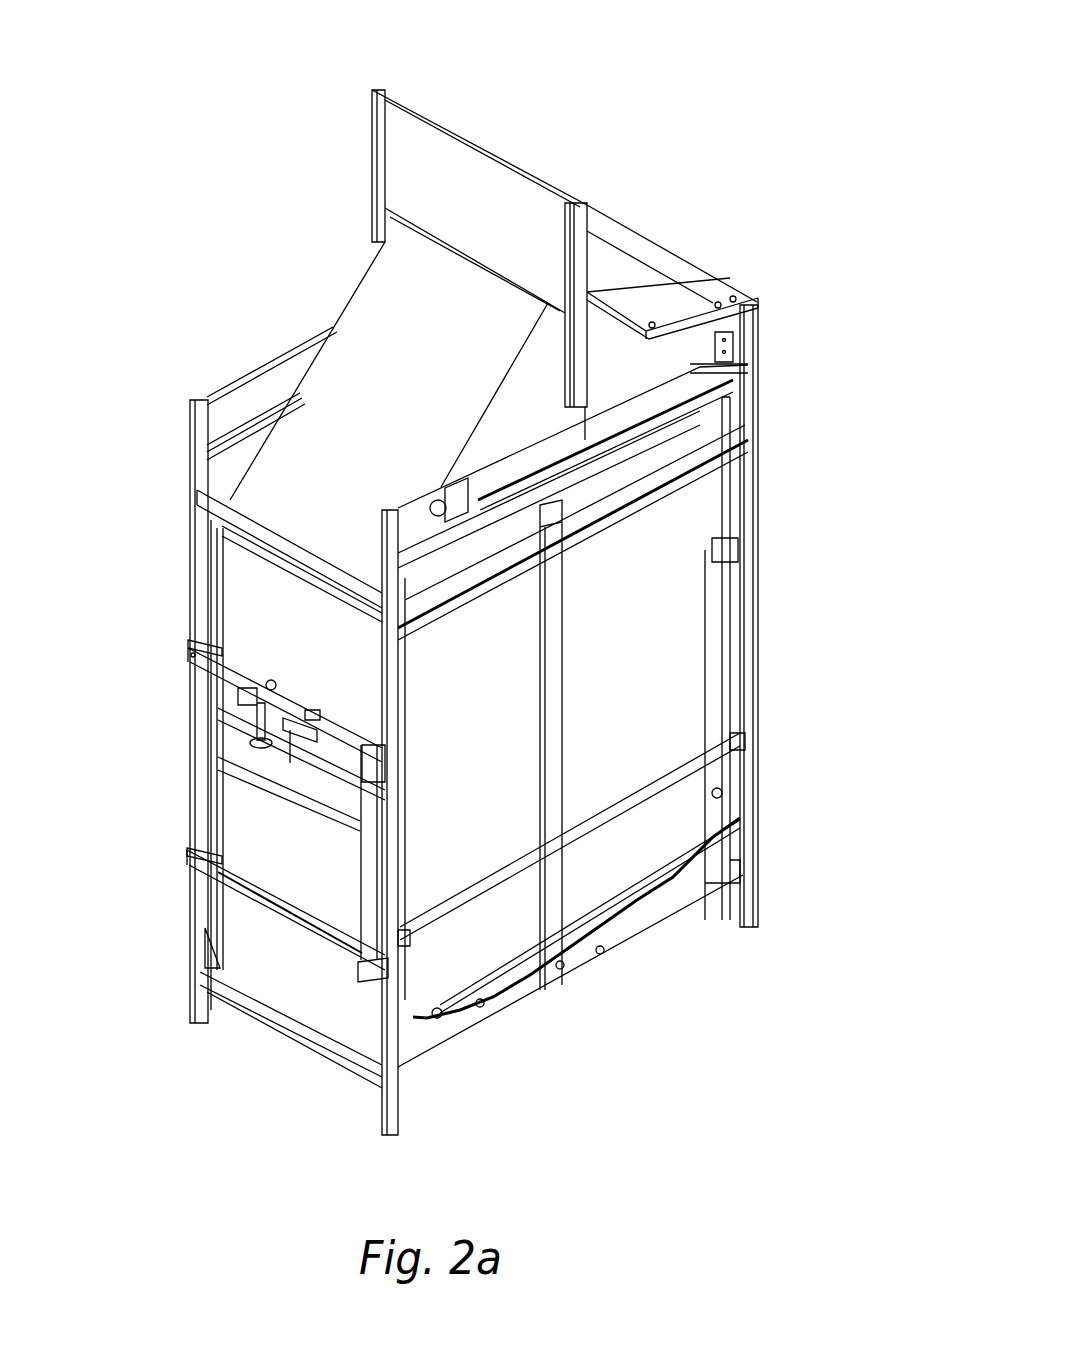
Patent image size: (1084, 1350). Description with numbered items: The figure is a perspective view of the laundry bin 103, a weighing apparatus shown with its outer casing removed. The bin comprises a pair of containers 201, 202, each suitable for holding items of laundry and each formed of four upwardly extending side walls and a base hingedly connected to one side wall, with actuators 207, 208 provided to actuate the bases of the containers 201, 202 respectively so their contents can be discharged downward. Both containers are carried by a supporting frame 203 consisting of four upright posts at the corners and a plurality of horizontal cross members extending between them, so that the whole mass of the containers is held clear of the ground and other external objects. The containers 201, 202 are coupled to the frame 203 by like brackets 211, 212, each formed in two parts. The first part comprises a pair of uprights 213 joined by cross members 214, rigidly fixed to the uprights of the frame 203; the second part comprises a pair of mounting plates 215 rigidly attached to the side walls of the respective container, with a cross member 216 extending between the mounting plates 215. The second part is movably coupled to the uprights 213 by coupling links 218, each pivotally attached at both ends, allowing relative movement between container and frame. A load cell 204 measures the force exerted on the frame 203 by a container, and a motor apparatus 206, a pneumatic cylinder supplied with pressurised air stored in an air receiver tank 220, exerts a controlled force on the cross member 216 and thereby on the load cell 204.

The laundry bin 103 is at (757, 92).
The container 201 is at (440, 810).
The container 202 is at (620, 763).
The supporting frame 203 is at (197, 425).
The load cell 204 is at (258, 741).
The motor apparatus 206 is at (257, 713).
The actuator 207 is at (480, 1003).
The actuator 208 is at (640, 907).
The bracket 211 is at (372, 905).
The bracket 212 is at (715, 663).
The upright 213 is at (212, 782).
The cross member 214 is at (227, 653).
The mounting plate 215 is at (423, 1017).
The cross member 216 is at (337, 777).
The coupling link 218 is at (733, 537).
The air receiver tank 220 is at (643, 398).